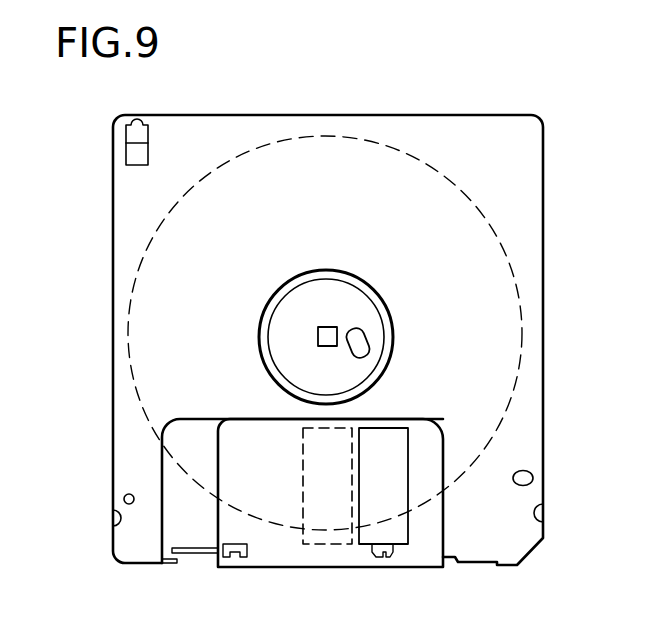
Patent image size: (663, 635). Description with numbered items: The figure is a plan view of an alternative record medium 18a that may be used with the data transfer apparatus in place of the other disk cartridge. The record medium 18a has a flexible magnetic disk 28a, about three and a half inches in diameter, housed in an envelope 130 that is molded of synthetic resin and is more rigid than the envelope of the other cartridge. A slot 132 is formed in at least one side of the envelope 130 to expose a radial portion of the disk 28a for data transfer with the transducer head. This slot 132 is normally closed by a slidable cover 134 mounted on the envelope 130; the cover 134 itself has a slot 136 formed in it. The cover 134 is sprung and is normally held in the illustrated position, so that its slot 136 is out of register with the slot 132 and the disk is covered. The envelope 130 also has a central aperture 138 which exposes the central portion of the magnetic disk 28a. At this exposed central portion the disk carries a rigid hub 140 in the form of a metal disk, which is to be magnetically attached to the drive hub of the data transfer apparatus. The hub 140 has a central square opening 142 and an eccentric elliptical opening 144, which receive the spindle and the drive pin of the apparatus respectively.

The record medium 18a is at (425, 111).
The flexible magnetic disk 28a is at (474, 201).
The envelope 130 is at (540, 222).
The slot 132 is at (305, 540).
The slidable cover 134 is at (272, 560).
The slot 136 is at (400, 545).
The central aperture 138 is at (268, 313).
The rigid hub 140 is at (345, 295).
The central square opening 142 is at (320, 326).
The eccentric elliptical opening 144 is at (352, 345).